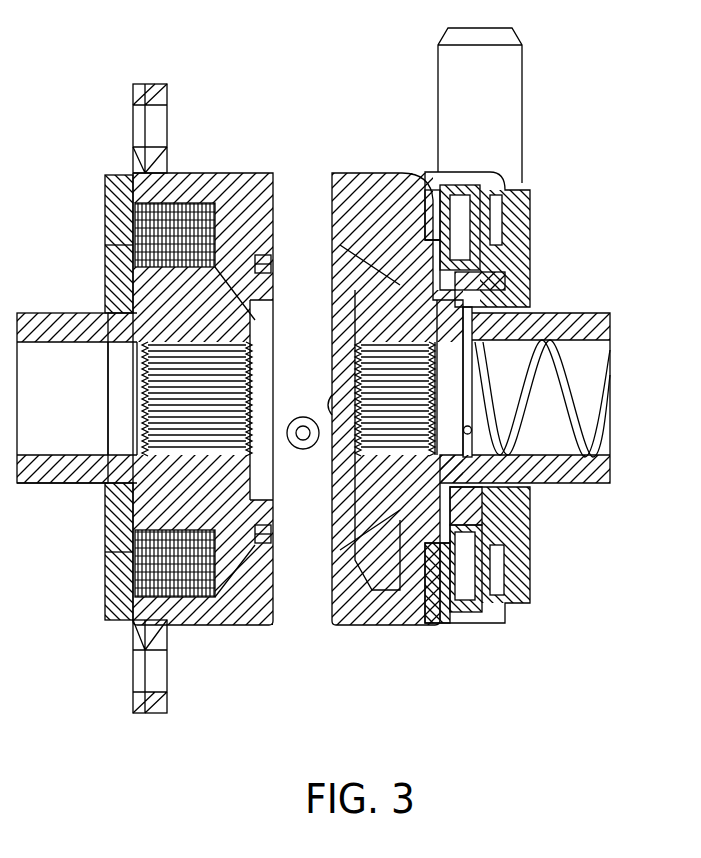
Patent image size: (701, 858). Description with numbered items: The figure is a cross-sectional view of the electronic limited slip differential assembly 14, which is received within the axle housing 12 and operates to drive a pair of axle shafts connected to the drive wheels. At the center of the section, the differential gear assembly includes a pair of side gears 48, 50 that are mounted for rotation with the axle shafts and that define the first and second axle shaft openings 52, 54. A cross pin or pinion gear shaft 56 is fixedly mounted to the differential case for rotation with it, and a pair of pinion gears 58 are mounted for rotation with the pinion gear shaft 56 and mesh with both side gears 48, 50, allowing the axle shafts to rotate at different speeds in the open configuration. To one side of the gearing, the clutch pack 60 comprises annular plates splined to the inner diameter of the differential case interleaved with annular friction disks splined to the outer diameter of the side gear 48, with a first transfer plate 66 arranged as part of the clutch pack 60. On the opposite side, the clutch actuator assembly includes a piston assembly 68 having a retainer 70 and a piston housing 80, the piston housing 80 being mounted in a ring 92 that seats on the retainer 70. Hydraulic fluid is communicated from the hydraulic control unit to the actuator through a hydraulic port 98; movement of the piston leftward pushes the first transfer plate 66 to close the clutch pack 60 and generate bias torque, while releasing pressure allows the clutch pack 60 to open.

The axle housing 12 is at (372, 195).
The electronic limited slip differential assembly 14 is at (562, 198).
The side gear 48 is at (215, 510).
The side gear 50 is at (384, 515).
The first axle shaft opening 52 is at (175, 332).
The second axle shaft opening 54 is at (462, 345).
The pinion gear shaft 56 is at (318, 590).
The pinion gear 58 is at (258, 265).
The clutch pack 60 is at (188, 612).
The first transfer plate 66 is at (216, 217).
The piston assembly 68 is at (498, 632).
The retainer 70 is at (520, 258).
The piston housing 80 is at (480, 622).
The ring 92 is at (426, 235).
The hydraulic port 98 is at (523, 93).